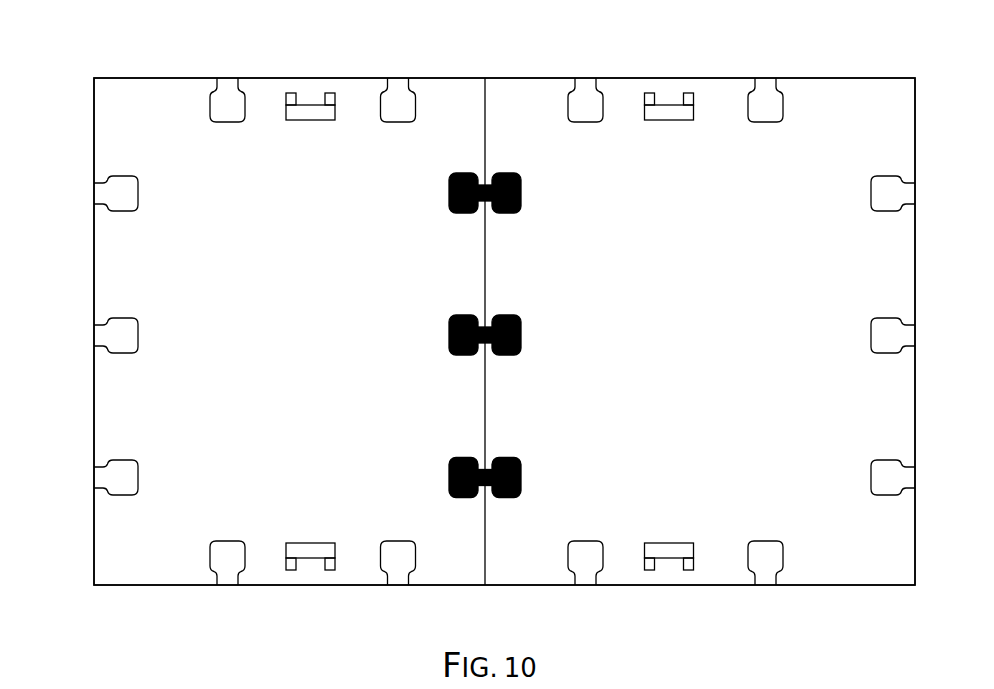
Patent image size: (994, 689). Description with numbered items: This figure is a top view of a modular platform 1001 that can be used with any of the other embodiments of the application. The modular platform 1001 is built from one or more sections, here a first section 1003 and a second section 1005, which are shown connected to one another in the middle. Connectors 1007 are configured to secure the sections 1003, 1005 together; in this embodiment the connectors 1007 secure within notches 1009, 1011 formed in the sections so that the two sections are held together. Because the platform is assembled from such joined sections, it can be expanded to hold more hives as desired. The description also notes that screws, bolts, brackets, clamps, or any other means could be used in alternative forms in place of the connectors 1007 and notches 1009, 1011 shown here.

The modular platform 1001 is at (125, 45).
The section 1003 is at (94, 424).
The section 1005 is at (915, 428).
The connector 1007 is at (523, 343).
The notch 1009 is at (139, 332).
The notch 1011 is at (872, 341).